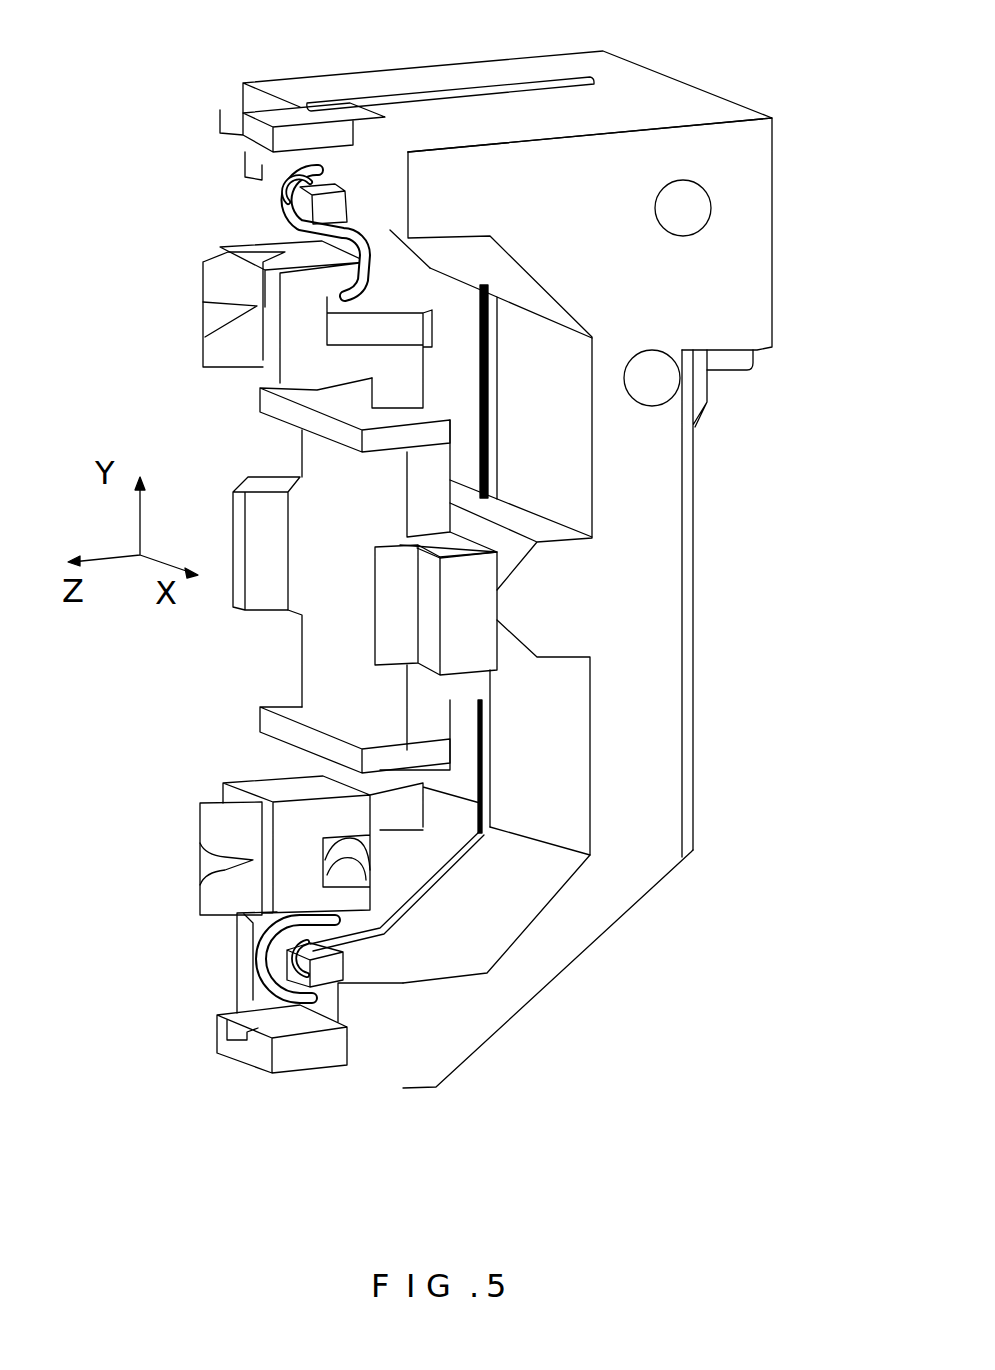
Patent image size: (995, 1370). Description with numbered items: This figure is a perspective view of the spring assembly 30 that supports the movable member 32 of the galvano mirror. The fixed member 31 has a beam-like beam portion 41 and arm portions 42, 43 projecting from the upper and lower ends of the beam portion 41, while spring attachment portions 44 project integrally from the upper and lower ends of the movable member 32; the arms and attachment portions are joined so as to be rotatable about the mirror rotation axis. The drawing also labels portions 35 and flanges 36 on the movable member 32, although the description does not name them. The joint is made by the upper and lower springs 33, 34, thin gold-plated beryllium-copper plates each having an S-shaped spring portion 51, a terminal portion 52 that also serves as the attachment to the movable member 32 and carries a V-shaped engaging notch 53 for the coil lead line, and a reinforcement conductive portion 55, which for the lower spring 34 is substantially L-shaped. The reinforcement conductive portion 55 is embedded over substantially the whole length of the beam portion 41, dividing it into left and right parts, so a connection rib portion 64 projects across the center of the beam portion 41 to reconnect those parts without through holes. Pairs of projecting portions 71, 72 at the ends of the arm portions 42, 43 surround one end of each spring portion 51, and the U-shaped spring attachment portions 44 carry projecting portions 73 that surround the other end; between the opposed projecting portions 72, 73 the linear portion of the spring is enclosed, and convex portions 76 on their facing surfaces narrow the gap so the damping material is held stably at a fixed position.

The spring assembly 30 is at (783, 415).
The fixed member 31 is at (703, 666).
The movable member 32 is at (300, 672).
The spring 33 is at (462, 85).
The spring 34 is at (497, 785).
The projection 35 is at (374, 590).
The flange 36 is at (258, 398).
The beam portion 41 is at (642, 570).
The arm portion 42 is at (568, 157).
The arm portion 43 is at (528, 998).
The spring attachment portion 44 is at (292, 332).
The S-shaped spring portion 51 is at (270, 990).
The terminal portion 52 is at (200, 272).
The V-shaped engaging notch 53 is at (203, 320).
The reinforcement conductive portion 55 is at (496, 457).
The connection rib portion 64 is at (548, 660).
The projecting portion 71 is at (235, 118).
The projecting portion 72 is at (290, 200).
The projecting portion 73 is at (360, 292).
The convex portion 76 is at (320, 205).